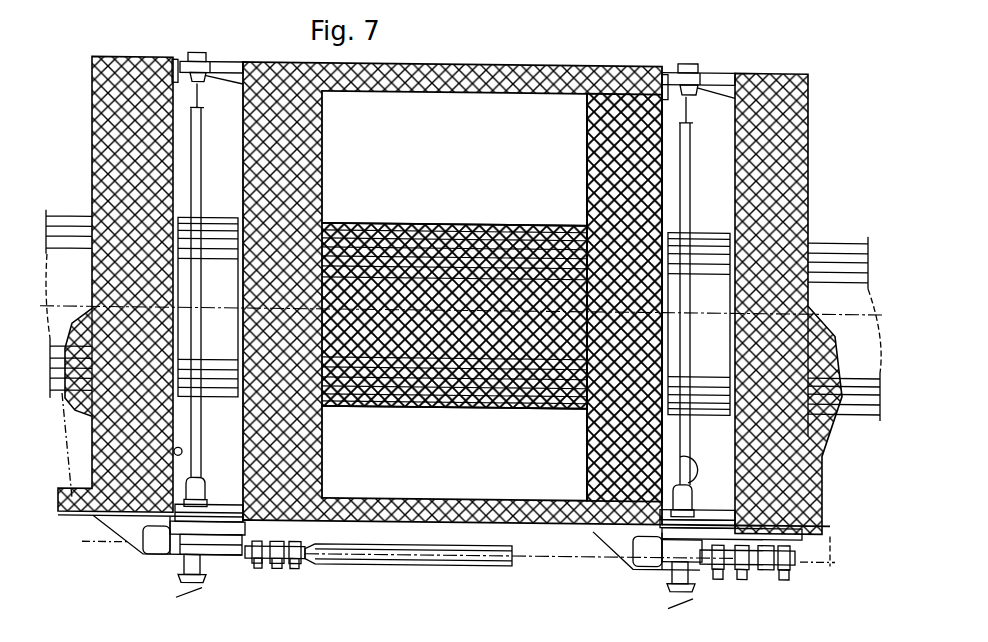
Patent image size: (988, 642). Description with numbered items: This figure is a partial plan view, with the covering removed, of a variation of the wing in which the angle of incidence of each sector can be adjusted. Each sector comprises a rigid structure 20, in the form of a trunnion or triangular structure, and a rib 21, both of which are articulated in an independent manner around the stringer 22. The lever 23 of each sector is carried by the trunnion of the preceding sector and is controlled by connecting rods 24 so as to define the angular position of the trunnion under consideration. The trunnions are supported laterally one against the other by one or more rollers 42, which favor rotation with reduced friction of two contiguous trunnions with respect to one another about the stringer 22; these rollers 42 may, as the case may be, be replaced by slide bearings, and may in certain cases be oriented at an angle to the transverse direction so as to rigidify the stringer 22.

The rigid structure 20 is at (587, 171).
The rib 21 is at (587, 455).
The stringer 22 is at (415, 407).
The lever 23 is at (278, 568).
The connecting rods 24 is at (437, 567).
The rollers 42 is at (187, 58).